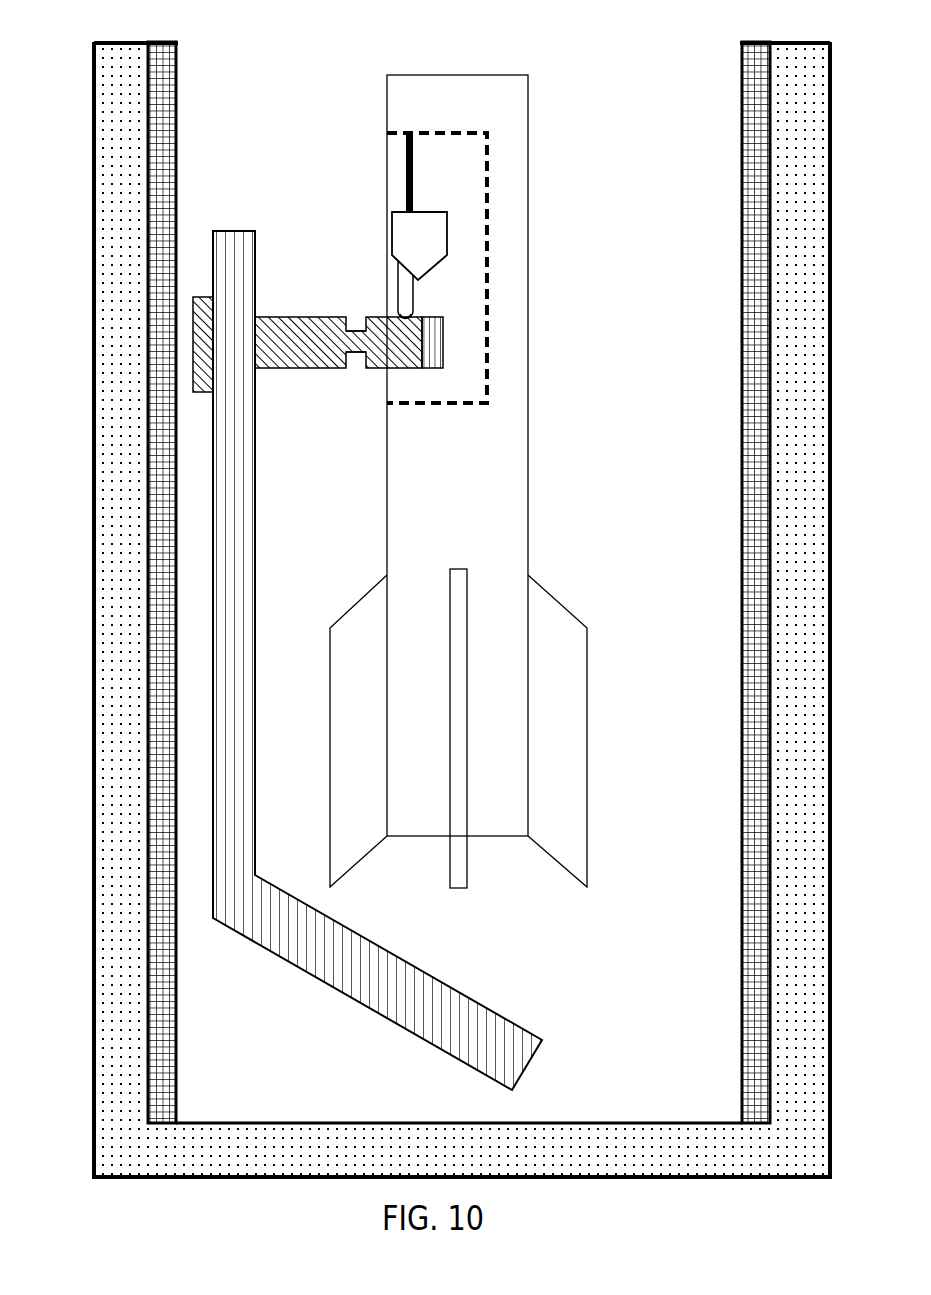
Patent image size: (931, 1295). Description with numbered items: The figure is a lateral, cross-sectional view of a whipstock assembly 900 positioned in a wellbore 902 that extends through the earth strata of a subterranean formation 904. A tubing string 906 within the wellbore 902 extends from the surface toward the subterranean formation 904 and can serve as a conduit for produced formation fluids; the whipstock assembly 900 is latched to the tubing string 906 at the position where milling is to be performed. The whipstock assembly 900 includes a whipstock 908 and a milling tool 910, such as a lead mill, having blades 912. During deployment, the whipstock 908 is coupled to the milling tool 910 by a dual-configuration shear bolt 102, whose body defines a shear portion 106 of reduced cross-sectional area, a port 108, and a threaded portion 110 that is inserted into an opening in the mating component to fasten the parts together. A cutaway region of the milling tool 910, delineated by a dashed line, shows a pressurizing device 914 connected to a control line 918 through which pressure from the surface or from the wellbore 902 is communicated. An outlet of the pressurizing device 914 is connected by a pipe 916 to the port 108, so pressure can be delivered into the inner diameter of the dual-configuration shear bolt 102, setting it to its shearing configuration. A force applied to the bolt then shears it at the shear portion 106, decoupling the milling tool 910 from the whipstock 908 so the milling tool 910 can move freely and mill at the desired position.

The whipstock assembly 900 is at (338, 92).
The wellbore 902 is at (192, 44).
The subterranean formation 904 is at (91, 130).
The tubing string 906 is at (740, 218).
The whipstock 908 is at (230, 226).
The milling tool 910 is at (539, 178).
The blades 912 is at (521, 869).
The pressurizing device 914 is at (450, 223).
The pipe 916 is at (416, 296).
The control line 918 is at (417, 178).
The dual-configuration shear bolt 102 is at (265, 316).
The shear portion 106 is at (358, 312).
The port 108 is at (416, 314).
The threaded portion 110 is at (431, 372).